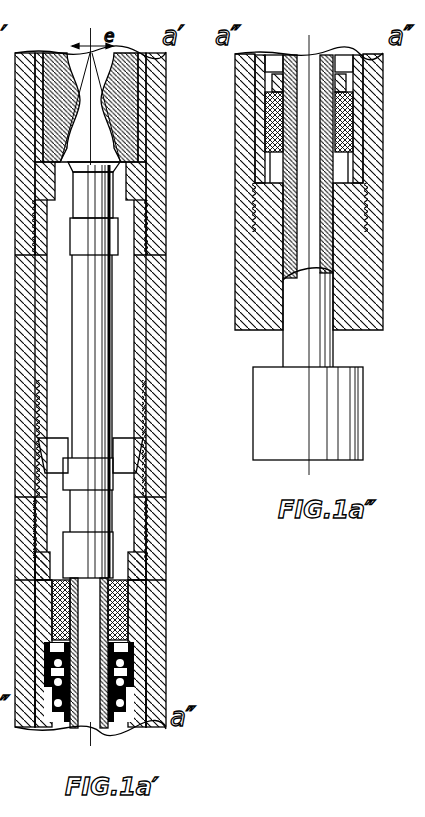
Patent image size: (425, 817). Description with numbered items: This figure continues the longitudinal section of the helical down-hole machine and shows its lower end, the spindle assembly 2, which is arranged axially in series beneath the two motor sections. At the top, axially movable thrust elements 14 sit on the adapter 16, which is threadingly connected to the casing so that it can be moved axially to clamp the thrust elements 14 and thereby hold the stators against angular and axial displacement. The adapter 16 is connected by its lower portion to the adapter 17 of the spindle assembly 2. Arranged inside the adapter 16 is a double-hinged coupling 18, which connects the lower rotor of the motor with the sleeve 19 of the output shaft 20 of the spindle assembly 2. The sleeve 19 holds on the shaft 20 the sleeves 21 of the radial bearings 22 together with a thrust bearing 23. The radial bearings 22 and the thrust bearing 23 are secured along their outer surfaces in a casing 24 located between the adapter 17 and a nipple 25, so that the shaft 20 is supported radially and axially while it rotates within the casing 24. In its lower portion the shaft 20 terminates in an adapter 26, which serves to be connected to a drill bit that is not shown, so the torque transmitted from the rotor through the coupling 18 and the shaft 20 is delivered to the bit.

In FIG. 1a', the spindle assembly 2 is at (167, 697).
In FIG. 1a', the thrust elements 14 is at (146, 231).
In FIG. 1a', the adapter 16 is at (157, 357).
In FIG. 1a', the adapter 17 is at (165, 470).
In FIG. 1a', the double-hinged coupling 18 is at (80, 322).
In FIG. 1a', the sleeve 19 is at (100, 548).
In FIG. 1a'', the output shaft 20 is at (292, 345).
In FIG. 1a', the sleeves 21 is at (130, 607).
In FIG. 1a'', the sleeves 21 is at (284, 92).
In FIG. 1a'', the radial bearings 22 is at (262, 112).
In FIG. 1a', the thrust bearing 23 is at (140, 662).
In FIG. 1a'', the casing 24 is at (255, 158).
In FIG. 1a'', the nipple 25 is at (247, 298).
In FIG. 1a'', the adapter 26 is at (265, 420).